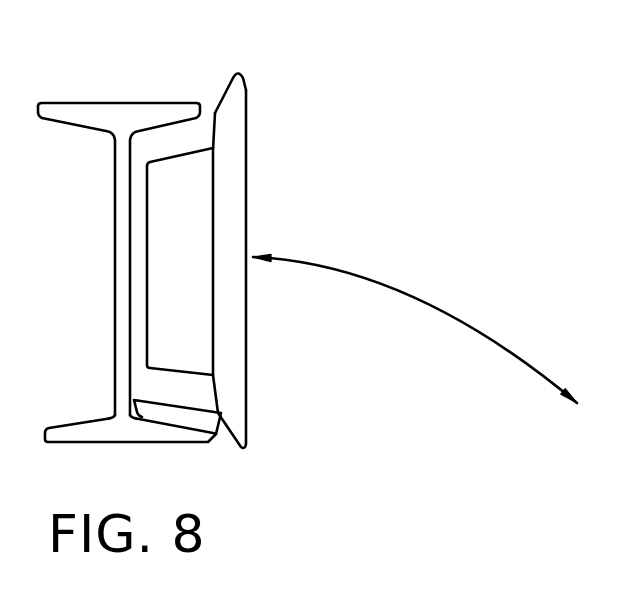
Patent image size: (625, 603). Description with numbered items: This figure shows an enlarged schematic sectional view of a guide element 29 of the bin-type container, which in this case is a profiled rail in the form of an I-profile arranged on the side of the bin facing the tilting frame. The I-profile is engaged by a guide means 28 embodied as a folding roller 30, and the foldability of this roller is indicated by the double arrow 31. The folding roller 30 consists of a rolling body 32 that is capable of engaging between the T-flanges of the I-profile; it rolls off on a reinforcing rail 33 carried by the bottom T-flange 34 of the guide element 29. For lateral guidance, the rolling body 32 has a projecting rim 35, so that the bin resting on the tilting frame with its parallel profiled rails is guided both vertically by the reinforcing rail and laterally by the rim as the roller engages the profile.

The guide means 28 is at (274, 128).
The guide element 29 is at (146, 84).
The folding roller 30 is at (230, 190).
The double arrow 31 is at (477, 317).
The rolling body 32 is at (185, 248).
The reinforcing rail 33 is at (178, 417).
The bottom T-flange 34 is at (127, 430).
The projecting rim 35 is at (233, 95).